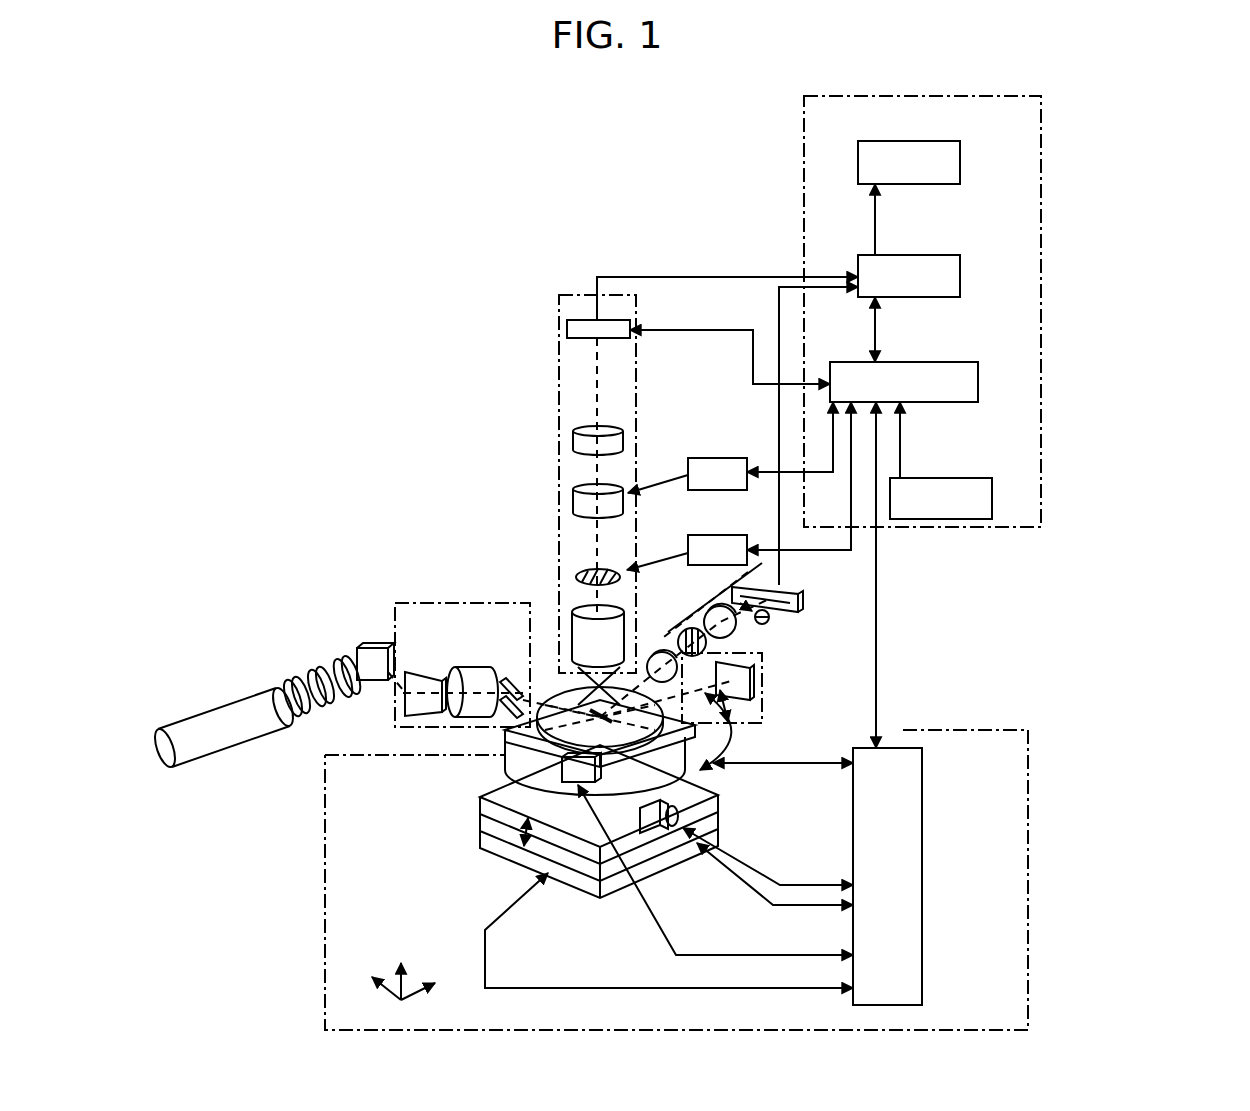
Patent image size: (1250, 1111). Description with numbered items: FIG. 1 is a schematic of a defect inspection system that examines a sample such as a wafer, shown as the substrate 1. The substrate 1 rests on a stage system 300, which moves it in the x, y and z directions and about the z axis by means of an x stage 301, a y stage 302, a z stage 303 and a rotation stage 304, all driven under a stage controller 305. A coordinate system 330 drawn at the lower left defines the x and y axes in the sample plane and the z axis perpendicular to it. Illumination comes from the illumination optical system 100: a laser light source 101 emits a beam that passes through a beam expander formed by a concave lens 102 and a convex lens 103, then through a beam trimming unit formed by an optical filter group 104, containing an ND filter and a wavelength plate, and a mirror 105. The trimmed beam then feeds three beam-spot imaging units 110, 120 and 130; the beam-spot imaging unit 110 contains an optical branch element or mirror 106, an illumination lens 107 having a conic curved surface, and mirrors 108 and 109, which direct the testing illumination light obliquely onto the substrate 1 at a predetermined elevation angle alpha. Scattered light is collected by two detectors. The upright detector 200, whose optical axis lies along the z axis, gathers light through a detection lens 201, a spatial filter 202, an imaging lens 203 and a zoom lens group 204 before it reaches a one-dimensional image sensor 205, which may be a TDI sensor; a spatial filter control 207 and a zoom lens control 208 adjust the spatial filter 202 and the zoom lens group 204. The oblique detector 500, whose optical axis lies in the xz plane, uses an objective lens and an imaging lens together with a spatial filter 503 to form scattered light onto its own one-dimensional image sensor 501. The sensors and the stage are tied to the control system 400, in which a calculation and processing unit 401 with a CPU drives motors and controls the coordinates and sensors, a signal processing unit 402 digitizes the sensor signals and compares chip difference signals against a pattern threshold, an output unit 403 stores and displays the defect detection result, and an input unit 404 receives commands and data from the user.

The substrate 1 is at (560, 690).
The illumination optical system 100 is at (368, 540).
The laser light source 101 is at (215, 718).
The concave lens 102 is at (282, 687).
The convex lens 103 is at (306, 676).
The optical filter group 104 is at (338, 664).
The mirror 105 is at (370, 648).
The optical branch element 106 is at (425, 677).
The illumination lens 107 is at (468, 667).
The mirror 108 is at (505, 681).
The mirror 109 is at (500, 716).
The beam-spot imaging unit 110 is at (432, 603).
The beam-spot imaging unit 120 is at (718, 783).
The beam-spot imaging unit 130 is at (765, 695).
The upright detector 200 is at (586, 292).
The detection lens 201 is at (572, 615).
The spatial filter 202 is at (585, 572).
The imaging lens 203 is at (573, 440).
The zoom lens group 204 is at (573, 497).
The one-dimensional sensor 205 is at (567, 330).
The spatial filter control 207 is at (690, 535).
The zoom lens control 208 is at (725, 457).
The stage system 300 is at (325, 902).
The x stage 301 is at (482, 818).
The y stage 302 is at (490, 835).
The z stage 303 is at (480, 801).
The rotation stage 304 is at (505, 770).
The stage controller 305 is at (922, 862).
The coordinate system 330 is at (396, 999).
The control system 400 is at (900, 96).
The calculation and processing unit 401 is at (962, 362).
The signal processing unit 402 is at (960, 270).
The output unit 403 is at (960, 160).
The input unit 404 is at (968, 478).
The oblique detector 500 is at (660, 650).
The one-dimensional sensor 501 is at (803, 600).
The spatial filter 503 is at (706, 645).